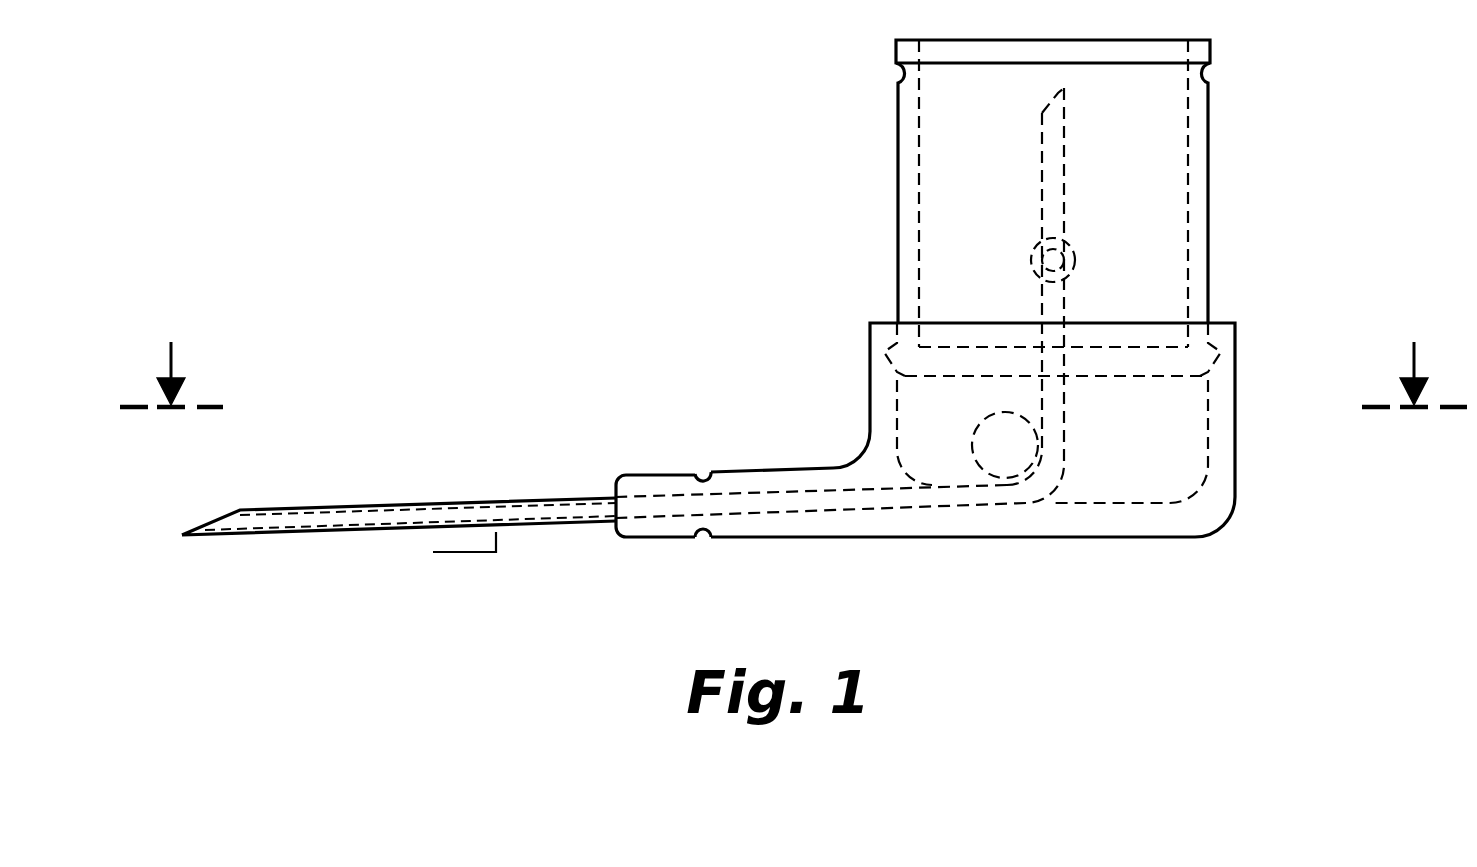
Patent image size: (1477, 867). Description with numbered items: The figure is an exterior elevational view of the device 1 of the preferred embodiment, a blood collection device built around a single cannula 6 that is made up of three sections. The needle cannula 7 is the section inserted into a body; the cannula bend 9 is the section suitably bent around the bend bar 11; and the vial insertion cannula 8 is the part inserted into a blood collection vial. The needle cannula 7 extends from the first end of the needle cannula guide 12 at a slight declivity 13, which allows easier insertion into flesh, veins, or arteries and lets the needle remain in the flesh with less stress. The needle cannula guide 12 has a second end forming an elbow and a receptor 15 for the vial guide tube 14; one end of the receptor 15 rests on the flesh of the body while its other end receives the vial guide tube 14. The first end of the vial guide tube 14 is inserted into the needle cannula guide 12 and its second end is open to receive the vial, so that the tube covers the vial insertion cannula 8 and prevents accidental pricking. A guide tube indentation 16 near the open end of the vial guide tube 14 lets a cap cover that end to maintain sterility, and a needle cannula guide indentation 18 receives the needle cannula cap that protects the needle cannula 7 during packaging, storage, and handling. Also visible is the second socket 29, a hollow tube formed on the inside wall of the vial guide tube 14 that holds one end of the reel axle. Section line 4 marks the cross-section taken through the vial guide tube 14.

The device 1 is at (652, 146).
The section line 4- 4 is at (793, 355).
The cannula 6 is at (455, 484).
The needle cannula 7 is at (540, 497).
The vial insertion cannula 8 is at (1042, 177).
The cannula bend 9 is at (1040, 488).
The bend bar 11 is at (972, 433).
The needle cannula guide 12 is at (654, 473).
The declivity 13 is at (473, 553).
The vial guide tube 14 is at (895, 190).
The receptor 15 is at (1235, 374).
The guide tube indentation 16 is at (902, 73).
The needle cannula guide indentation 18 is at (703, 540).
The second socket 29 is at (1032, 257).